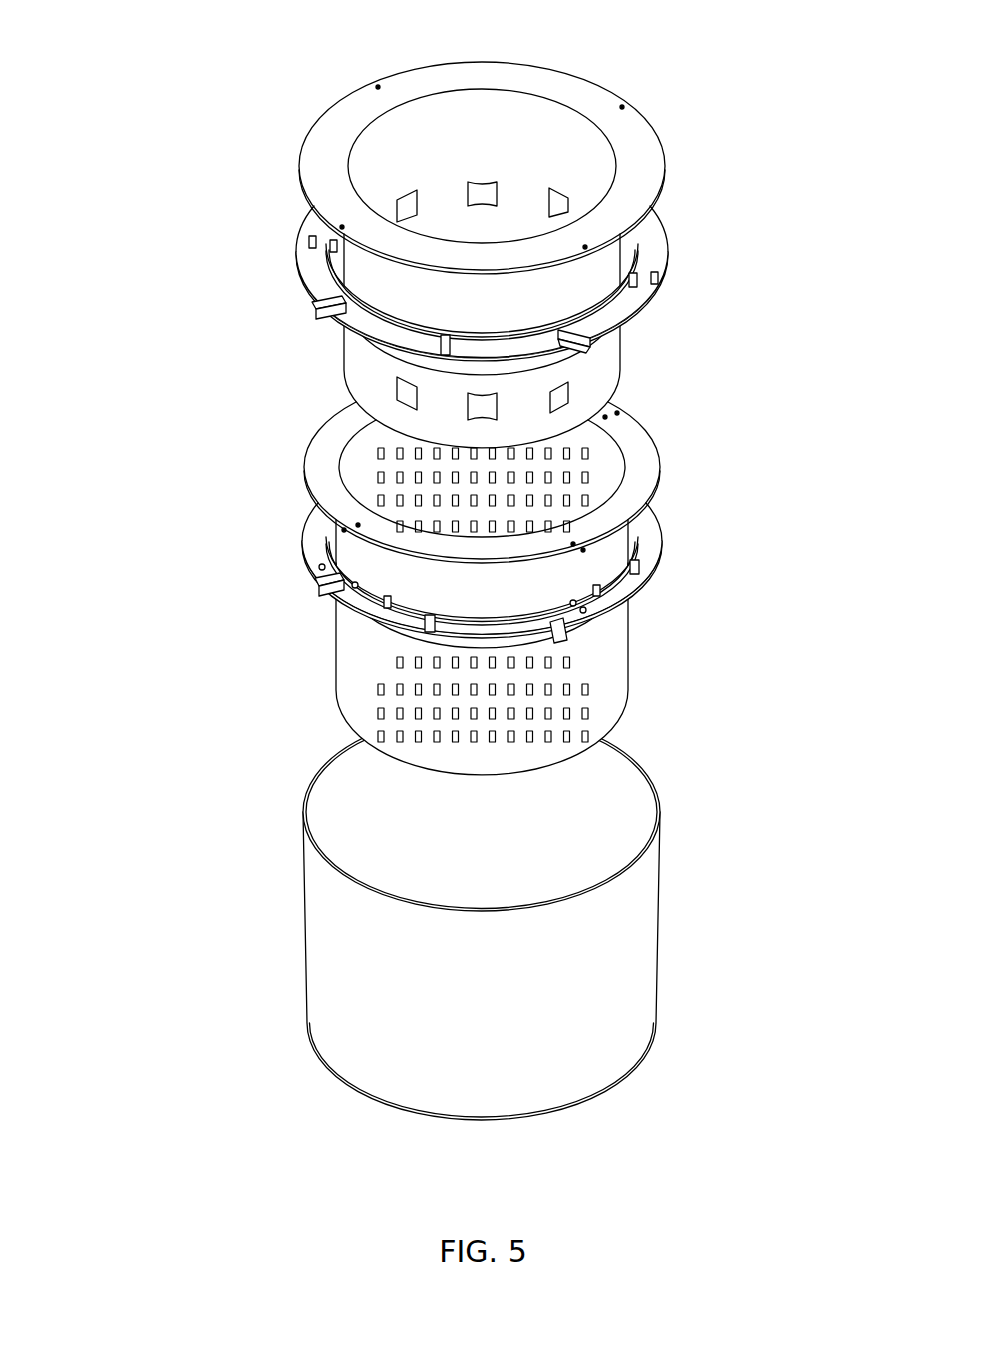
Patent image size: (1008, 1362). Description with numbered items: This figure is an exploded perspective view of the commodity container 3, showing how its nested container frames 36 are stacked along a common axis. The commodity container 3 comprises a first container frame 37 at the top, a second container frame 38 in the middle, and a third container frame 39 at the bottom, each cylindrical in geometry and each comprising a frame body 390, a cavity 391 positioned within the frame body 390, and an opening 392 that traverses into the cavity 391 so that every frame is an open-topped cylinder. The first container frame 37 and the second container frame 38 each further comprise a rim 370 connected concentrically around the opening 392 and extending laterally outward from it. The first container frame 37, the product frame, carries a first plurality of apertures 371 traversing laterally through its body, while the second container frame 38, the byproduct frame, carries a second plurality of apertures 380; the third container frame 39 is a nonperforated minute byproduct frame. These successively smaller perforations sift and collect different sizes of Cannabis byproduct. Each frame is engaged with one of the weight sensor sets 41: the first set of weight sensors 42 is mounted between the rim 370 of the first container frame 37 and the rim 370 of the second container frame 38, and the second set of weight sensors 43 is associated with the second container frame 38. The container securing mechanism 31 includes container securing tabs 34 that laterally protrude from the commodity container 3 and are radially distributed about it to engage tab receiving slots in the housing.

The commodity container 3 is at (820, 235).
The container frames 36 is at (629, 79).
The first container frame 37 is at (372, 242).
The second container frame 38 is at (395, 583).
The third container frame 39 is at (414, 916).
The rim 370 is at (302, 238).
The first plurality of apertures 371 is at (487, 185).
The second plurality of apertures 380 is at (588, 454).
The frame body 390 is at (652, 947).
The cavity 391 is at (542, 862).
The opening 392 is at (458, 826).
The weight sensor sets 41 is at (466, 460).
The first set of weight sensors 42 is at (557, 331).
The second set of weight sensors 43 is at (457, 622).
The container securing mechanism 31 is at (308, 593).
The container securing tab 34 is at (571, 632).